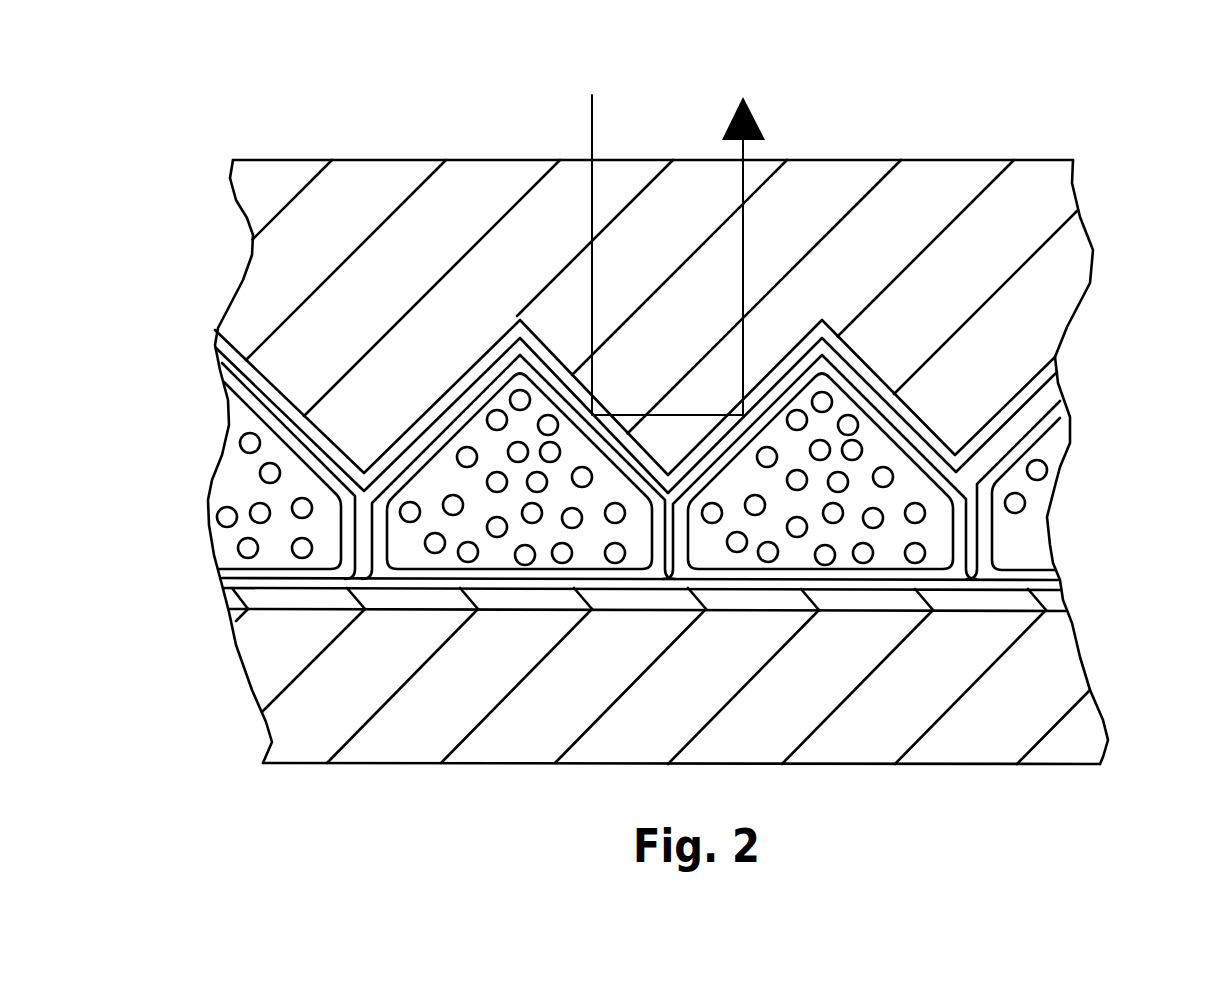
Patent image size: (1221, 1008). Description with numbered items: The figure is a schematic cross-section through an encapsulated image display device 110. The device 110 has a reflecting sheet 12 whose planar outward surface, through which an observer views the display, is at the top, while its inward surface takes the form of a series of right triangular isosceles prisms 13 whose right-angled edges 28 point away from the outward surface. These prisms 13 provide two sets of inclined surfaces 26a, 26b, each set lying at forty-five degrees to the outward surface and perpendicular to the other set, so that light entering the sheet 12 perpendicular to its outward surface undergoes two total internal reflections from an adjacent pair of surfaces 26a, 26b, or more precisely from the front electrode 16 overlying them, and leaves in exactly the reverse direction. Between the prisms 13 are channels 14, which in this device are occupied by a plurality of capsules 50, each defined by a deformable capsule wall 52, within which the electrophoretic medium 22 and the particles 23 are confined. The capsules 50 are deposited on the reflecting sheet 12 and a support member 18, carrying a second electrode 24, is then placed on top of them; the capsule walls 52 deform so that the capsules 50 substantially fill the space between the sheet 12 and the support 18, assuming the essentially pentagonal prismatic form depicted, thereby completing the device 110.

The encapsulated image display device 110 is at (135, 343).
The reflecting sheet 12 is at (426, 274).
The right triangular isosceles prisms 13 is at (395, 423).
The channels 14 is at (520, 338).
The front electrode 16 is at (890, 397).
The support member 18 is at (1022, 672).
The electrophoretic medium 22 is at (1013, 545).
The particles 23 is at (1047, 470).
The electrode 24 is at (997, 598).
The first set of inclined surfaces 26a is at (878, 385).
The second set of inclined surfaces 26b is at (1013, 392).
The right-angled edges 28 is at (955, 450).
The capsules 50 is at (150, 527).
The capsule wall 52 is at (337, 522).